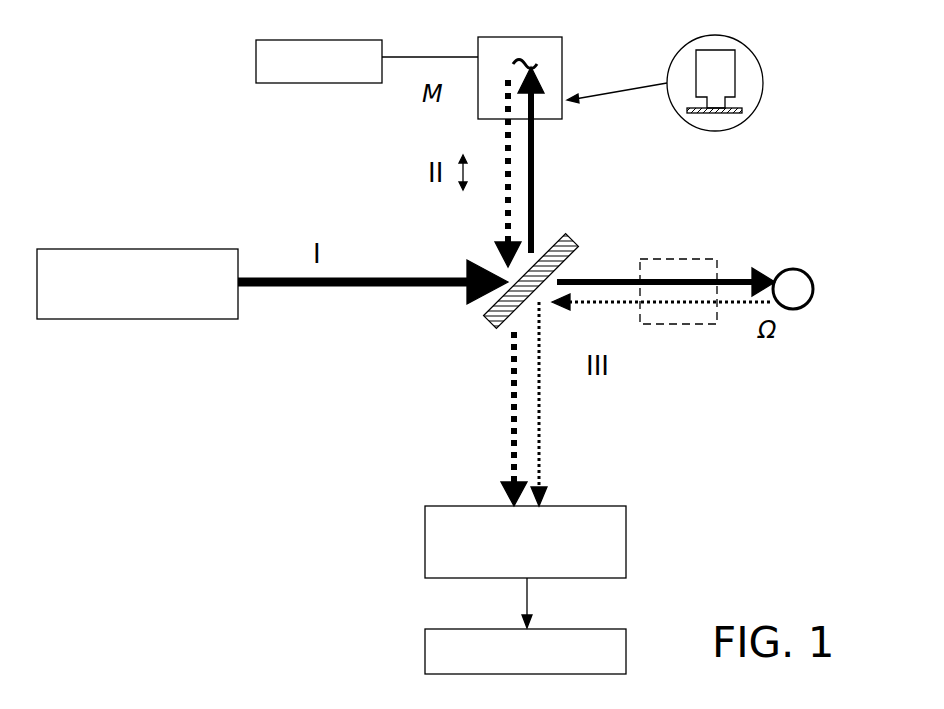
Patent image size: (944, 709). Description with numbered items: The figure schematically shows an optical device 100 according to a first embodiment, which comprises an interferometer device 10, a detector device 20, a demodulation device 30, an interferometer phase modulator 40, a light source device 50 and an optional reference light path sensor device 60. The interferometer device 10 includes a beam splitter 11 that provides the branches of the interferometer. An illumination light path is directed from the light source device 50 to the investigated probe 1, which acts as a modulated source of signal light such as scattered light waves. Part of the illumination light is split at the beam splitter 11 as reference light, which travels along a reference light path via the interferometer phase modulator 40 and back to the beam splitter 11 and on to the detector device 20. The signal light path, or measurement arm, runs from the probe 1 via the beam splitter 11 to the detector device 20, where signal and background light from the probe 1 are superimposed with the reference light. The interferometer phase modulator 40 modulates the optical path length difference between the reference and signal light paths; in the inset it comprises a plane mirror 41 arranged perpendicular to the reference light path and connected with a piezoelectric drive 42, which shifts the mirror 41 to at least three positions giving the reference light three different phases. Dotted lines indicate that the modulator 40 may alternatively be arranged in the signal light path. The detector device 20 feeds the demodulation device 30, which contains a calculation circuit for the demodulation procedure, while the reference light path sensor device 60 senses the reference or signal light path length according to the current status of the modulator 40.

The optical device 100 is at (163, 141).
The interferometer device 10 is at (401, 413).
The light source device 50 is at (188, 302).
The reference light path sensor device 60 is at (335, 75).
The interferometer phase modulator 40 is at (513, 68).
The beam splitter 11 is at (580, 245).
The detector device 20 is at (585, 563).
The demodulation device 30 is at (585, 667).
The probe 1 is at (793, 282).
The plane mirror 41 is at (740, 110).
The piezoelectric drive 42 is at (717, 77).